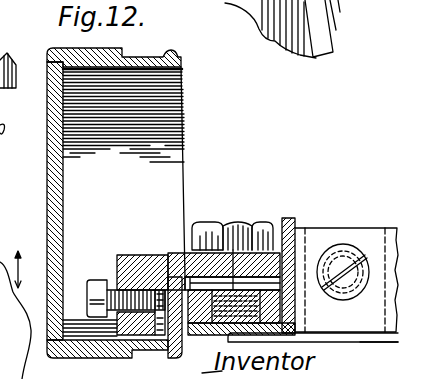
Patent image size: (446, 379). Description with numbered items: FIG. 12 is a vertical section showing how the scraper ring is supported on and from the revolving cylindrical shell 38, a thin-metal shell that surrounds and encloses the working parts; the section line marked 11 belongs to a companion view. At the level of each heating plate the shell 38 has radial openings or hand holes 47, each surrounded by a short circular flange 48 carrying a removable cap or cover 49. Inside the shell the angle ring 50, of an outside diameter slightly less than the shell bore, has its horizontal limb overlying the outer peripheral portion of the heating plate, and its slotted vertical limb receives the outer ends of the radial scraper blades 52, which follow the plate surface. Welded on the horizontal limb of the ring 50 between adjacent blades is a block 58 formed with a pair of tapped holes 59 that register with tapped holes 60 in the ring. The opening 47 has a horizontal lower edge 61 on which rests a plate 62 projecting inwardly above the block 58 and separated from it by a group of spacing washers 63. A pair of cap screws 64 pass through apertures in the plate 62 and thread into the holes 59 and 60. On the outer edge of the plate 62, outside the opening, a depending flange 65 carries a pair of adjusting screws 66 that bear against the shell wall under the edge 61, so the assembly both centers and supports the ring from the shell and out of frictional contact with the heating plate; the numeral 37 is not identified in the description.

The section line 11 is at (18, 272).
The base 37 is at (365, 340).
The cylindrical shell 38 is at (170, 356).
The radial openings or hand holes 47 is at (165, 141).
The short circular flange 48 is at (150, 57).
The removable cap or cover 49 is at (50, 131).
The angle ring 50 is at (295, 222).
The radial scraper blades 52 is at (373, 233).
The block 58 is at (272, 296).
The tapped holes 59 is at (241, 325).
The tapped holes 60 is at (295, 336).
The horizontal lower edge 61 is at (149, 268).
The plate 62 is at (197, 250).
The spacing washers 63 is at (233, 265).
The cap screws 64 is at (264, 222).
The depending flange 65 is at (113, 350).
The adjusting screws 66 is at (87, 292).